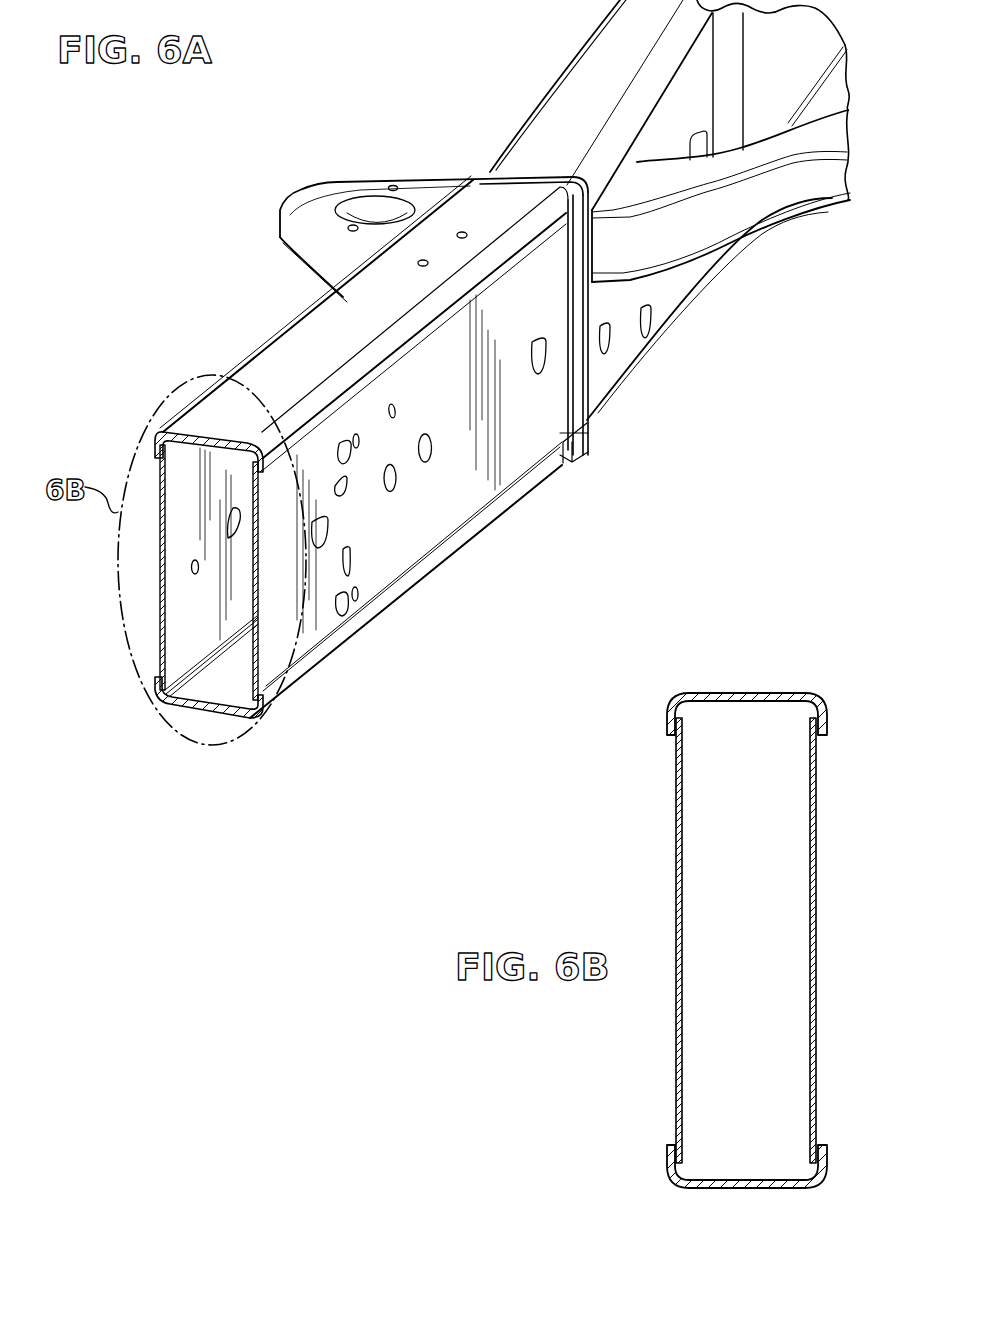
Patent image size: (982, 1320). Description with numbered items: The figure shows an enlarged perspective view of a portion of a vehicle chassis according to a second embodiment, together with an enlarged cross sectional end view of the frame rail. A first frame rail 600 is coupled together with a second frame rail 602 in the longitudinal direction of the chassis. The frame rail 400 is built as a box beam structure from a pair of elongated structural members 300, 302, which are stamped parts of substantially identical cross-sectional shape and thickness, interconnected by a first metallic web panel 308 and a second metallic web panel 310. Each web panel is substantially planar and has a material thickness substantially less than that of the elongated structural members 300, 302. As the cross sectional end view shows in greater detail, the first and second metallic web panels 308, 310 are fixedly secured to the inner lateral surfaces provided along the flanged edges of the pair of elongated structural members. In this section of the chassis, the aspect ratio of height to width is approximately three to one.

In FIG. 6A, the elongated structural member 300 is at (215, 432).
In FIG. 6B, the elongated structural member 300 is at (743, 693).
In FIG. 6A, the elongated structural member 302 is at (203, 712).
In FIG. 6B, the elongated structural member 302 is at (735, 1192).
In FIG. 6A, the first metallic web panel 308 is at (158, 582).
In FIG. 6B, the first metallic web panel 308 is at (675, 848).
In FIG. 6A, the second metallic web panel 310 is at (278, 643).
In FIG. 6B, the second metallic web panel 310 is at (818, 944).
In FIG. 6A, the frame rail 400 is at (504, 529).
In FIG. 6A, the first frame rail 600 is at (477, 202).
In FIG. 6A, the second frame rail 602 is at (577, 110).